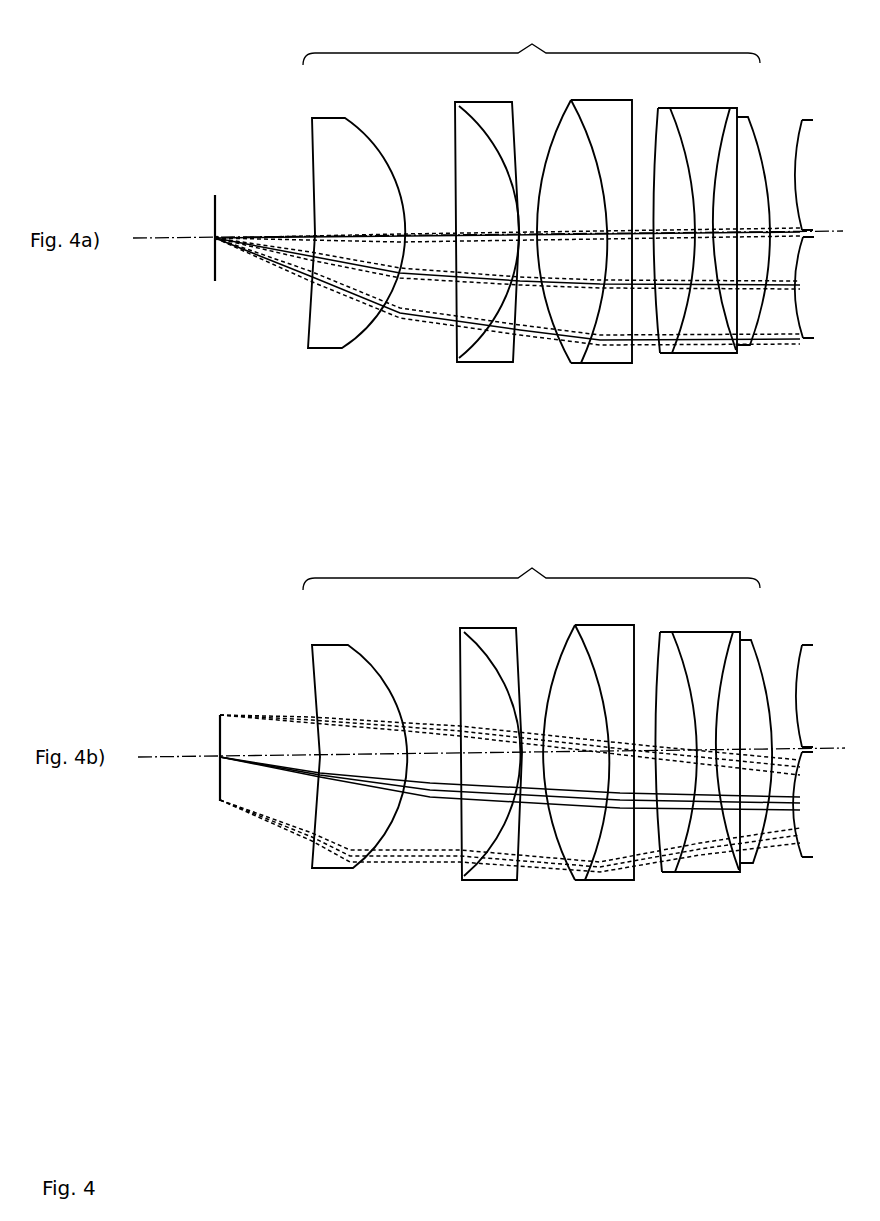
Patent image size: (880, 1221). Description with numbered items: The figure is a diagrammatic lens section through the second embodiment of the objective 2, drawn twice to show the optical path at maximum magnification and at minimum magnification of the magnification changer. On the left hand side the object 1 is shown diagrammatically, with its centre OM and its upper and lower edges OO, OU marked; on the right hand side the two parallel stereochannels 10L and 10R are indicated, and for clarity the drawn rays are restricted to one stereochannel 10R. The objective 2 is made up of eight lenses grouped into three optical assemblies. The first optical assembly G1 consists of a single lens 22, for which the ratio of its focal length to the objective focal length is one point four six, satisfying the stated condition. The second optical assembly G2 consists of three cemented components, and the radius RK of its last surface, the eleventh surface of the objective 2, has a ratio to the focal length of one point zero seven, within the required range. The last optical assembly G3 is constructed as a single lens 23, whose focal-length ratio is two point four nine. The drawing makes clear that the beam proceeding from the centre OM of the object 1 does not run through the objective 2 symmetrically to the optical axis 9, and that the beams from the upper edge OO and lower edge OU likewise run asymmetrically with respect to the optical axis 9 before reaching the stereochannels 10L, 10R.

In FIG. 4A, the object 1 is at (215, 196).
In FIG. 4B, the object 1 is at (220, 716).
In FIG. 4A, the objective 2 is at (531, 44).
In FIG. 4B, the objective 2 is at (531, 570).
In FIG. 4A, the optical axis 9 is at (150, 237).
In FIG. 4B, the optical axis 9 is at (156, 756).
In FIG. 4A, the single lens 22 is at (365, 135).
In FIG. 4B, the single lens 22 is at (370, 662).
In FIG. 4A, the single lens 23 is at (750, 127).
In FIG. 4B, the single lens 23 is at (755, 652).
In FIG. 4A, the radius of the last surface of the second optical assembly RK is at (728, 137).
In FIG. 4B, the radius of the last surface of the second optical assembly RK is at (735, 662).
In FIG. 4A, the left stereochannel 10L is at (810, 175).
In FIG. 4B, the left stereochannel 10L is at (813, 696).
In FIG. 4A, the right stereochannel 10R is at (811, 287).
In FIG. 4B, the right stereochannel 10R is at (813, 804).
In FIG. 4A, the first optical assembly G1 is at (355, 257).
In FIG. 4B, the first optical assembly G1 is at (360, 780).
In FIG. 4A, the second optical assembly G2 is at (737, 387).
In FIG. 4B, the second optical assembly G2 is at (745, 905).
In FIG. 4A, the third optical assembly G3 is at (713, 248).
In FIG. 4B, the third optical assembly G3 is at (715, 771).
In FIG. 4A, the upper edge of the object OO is at (192, 208).
In FIG. 4B, the upper edge of the object OO is at (197, 718).
In FIG. 4A, the centre of the object OM is at (193, 233).
In FIG. 4B, the centre of the object OM is at (198, 751).
In FIG. 4A, the lower edge of the object OU is at (192, 255).
In FIG. 4B, the lower edge of the object OU is at (197, 793).